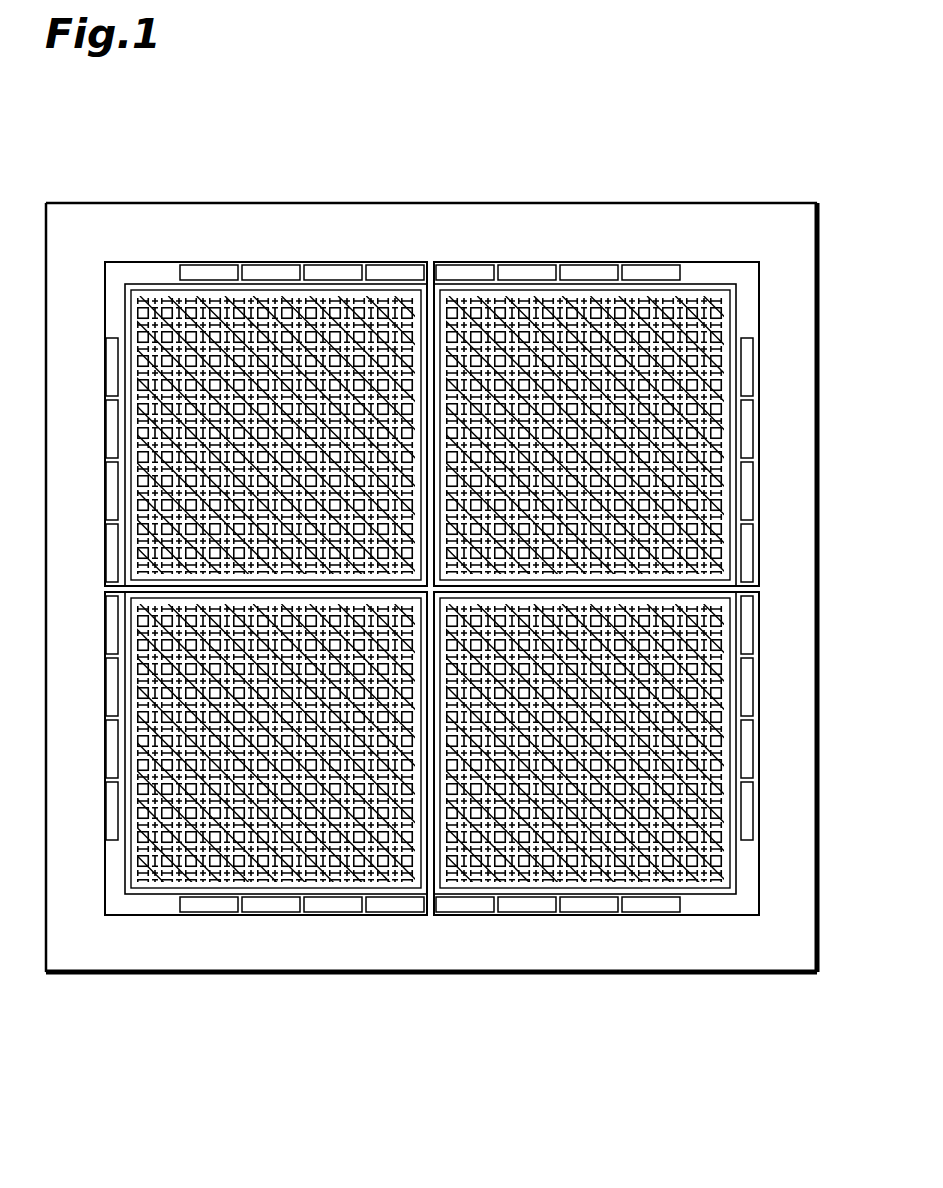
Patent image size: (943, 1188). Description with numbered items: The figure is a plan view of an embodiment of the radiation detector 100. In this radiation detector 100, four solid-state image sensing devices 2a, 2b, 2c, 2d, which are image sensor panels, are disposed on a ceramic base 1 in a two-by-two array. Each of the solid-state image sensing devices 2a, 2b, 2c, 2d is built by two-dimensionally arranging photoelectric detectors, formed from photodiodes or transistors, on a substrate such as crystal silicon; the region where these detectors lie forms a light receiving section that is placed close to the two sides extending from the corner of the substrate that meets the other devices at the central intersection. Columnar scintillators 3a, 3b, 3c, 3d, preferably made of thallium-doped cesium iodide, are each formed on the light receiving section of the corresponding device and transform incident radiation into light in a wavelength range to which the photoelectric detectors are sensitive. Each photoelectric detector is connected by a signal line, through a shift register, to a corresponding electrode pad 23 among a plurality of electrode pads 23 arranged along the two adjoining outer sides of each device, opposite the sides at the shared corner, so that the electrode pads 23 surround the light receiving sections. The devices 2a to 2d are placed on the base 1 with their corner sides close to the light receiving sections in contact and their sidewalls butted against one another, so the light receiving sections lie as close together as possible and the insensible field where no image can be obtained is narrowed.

The ceramic base 1 is at (630, 203).
The radiation detector 100 is at (706, 161).
The solid-state image sensing device 2a is at (272, 266).
The solid-state image sensing device 2b is at (732, 268).
The solid-state image sensing device 2c is at (260, 917).
The solid-state image sensing device 2d is at (587, 917).
The columnar scintillator 3a is at (353, 338).
The columnar scintillator 3b is at (493, 338).
The columnar scintillator 3c is at (365, 840).
The columnar scintillator 3d is at (510, 838).
The electrode pad 23 is at (100, 345).